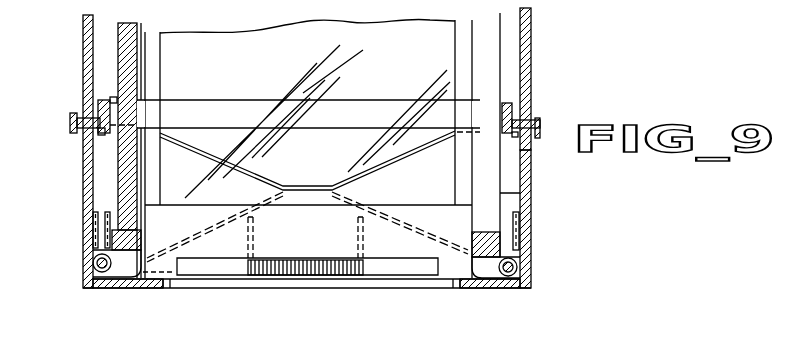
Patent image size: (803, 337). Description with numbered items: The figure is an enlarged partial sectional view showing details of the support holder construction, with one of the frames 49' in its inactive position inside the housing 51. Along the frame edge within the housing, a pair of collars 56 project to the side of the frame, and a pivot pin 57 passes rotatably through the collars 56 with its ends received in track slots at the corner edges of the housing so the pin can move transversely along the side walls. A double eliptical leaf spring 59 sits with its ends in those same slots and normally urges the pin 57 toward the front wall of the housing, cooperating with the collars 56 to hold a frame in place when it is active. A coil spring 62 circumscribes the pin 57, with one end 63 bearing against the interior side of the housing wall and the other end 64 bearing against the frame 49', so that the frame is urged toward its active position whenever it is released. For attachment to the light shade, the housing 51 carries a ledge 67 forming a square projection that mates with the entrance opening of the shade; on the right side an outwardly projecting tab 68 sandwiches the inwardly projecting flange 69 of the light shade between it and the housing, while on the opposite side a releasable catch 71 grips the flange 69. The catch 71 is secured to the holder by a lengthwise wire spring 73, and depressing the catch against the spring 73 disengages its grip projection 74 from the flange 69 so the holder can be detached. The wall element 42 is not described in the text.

The outer side wall 42 is at (531, 42).
The frame 49' is at (86, 136).
The housing 51 is at (531, 180).
The collars 56 is at (122, 268).
The pivot pin 57 is at (92, 265).
The double eliptical leaf spring 59 is at (267, 178).
The coil spring 62 is at (292, 278).
The end of coil spring 63 is at (363, 240).
The end of coil spring 64 is at (253, 250).
The ledge 67 is at (343, 112).
The outwardly projecting tab 68 is at (522, 108).
The inwardly projecting flange 69 is at (100, 116).
The releasable catch 71 is at (70, 125).
The wire spring 73 is at (100, 133).
The grip projection 74 is at (100, 100).